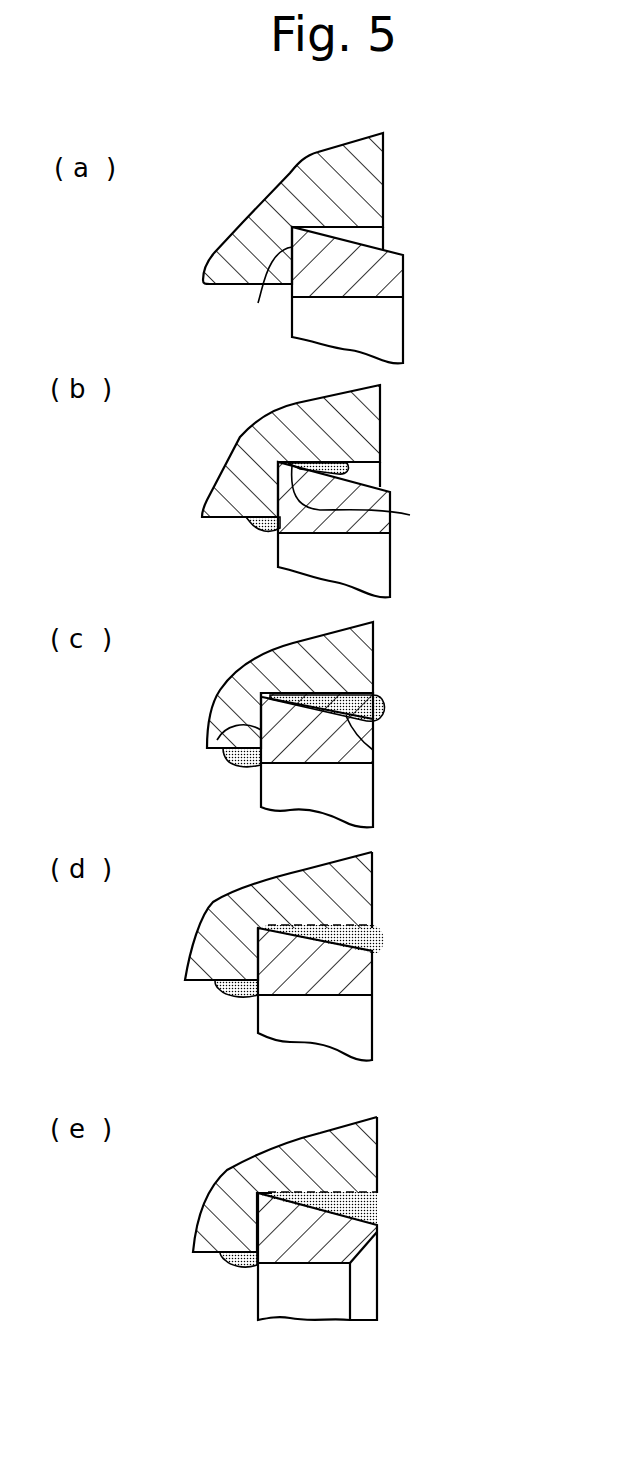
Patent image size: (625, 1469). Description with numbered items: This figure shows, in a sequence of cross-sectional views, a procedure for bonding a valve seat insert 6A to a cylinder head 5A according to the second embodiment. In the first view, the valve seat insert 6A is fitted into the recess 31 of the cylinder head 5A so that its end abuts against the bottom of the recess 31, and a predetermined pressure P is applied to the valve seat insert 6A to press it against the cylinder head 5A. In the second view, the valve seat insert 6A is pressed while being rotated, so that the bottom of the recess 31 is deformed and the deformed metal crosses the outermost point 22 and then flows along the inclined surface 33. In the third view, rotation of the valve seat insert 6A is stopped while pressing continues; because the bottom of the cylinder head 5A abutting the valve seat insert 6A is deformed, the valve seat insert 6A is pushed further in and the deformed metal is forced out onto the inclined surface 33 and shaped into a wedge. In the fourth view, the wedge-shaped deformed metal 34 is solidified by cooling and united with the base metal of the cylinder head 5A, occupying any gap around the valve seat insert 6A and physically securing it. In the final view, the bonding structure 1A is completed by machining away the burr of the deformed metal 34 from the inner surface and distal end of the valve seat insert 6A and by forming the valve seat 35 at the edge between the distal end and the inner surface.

The cylinder head 5A is at (350, 203).
The valve seat insert 6A is at (368, 337).
The recess 31 is at (200, 782).
The inclined surface 33 is at (370, 482).
The outermost point 22 is at (368, 502).
The wedge-shaped deformed metal 34 is at (360, 937).
The valve seat 35 is at (370, 1264).
The bonding structure 1A is at (408, 1147).
The predetermined pressure P is at (416, 330).